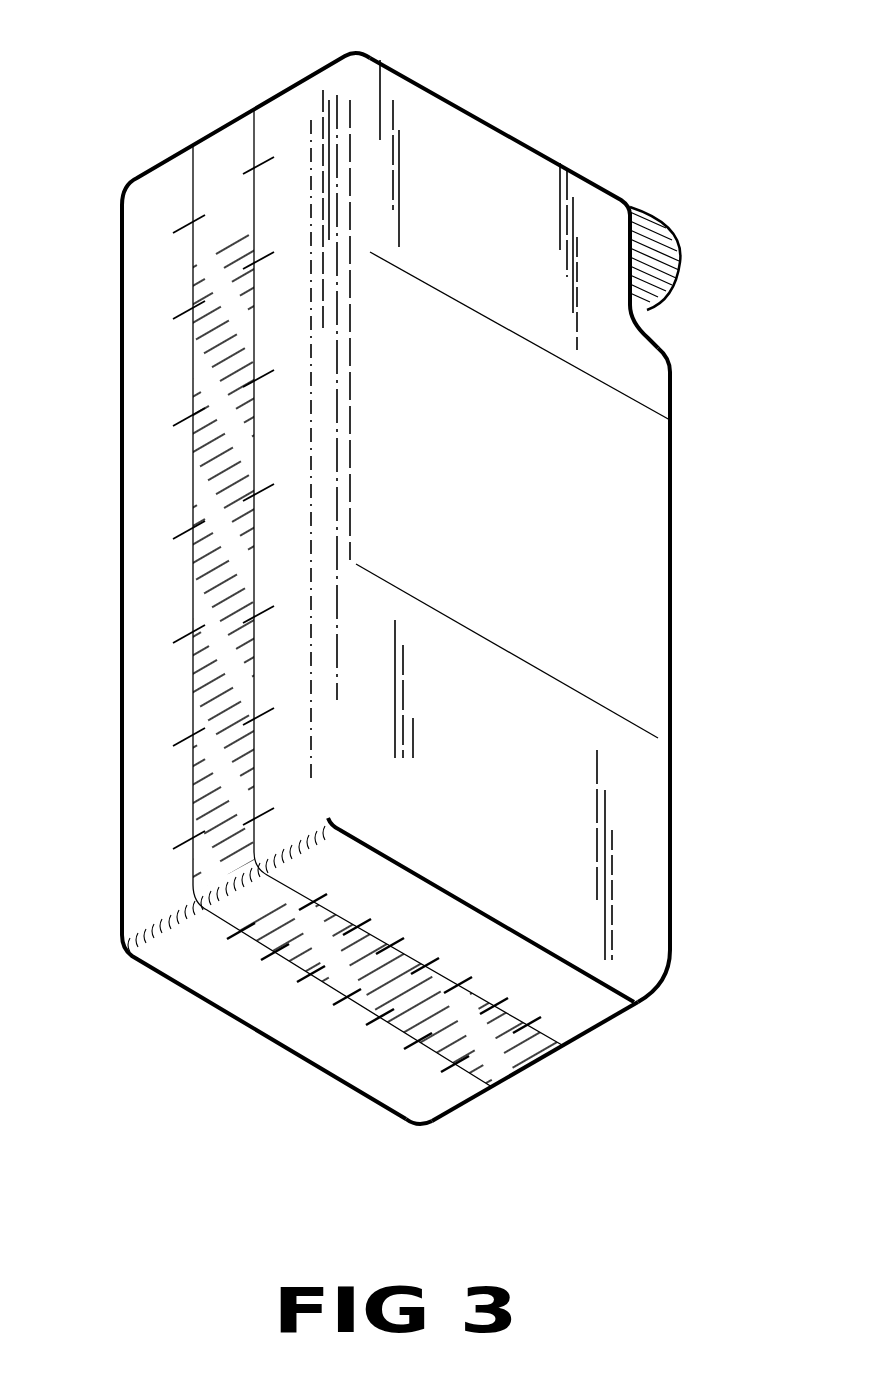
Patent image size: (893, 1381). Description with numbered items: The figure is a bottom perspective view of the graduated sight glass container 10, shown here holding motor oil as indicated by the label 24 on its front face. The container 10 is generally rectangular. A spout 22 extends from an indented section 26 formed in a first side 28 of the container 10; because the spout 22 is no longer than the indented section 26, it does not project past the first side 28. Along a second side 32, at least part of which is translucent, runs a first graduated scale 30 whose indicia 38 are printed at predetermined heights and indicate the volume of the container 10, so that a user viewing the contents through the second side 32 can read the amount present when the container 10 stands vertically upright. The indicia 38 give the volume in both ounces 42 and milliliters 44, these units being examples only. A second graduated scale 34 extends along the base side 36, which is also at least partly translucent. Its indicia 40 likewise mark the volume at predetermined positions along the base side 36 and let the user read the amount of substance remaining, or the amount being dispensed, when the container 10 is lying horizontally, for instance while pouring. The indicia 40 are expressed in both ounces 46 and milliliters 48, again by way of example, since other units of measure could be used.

The graduated sight glass container 10 is at (157, 111).
The spout 22 is at (654, 215).
The label 24 is at (657, 680).
The indented section 26 is at (645, 342).
The first side 28 is at (684, 512).
The first graduated scale 30 is at (190, 595).
The second side 32 is at (152, 289).
The second graduated scale 34 is at (268, 1027).
The base side 36 is at (593, 1001).
The indicia 38 is at (140, 530).
The indicia 40 is at (370, 1073).
The ounces 42 is at (290, 370).
The milliliters 44 is at (165, 328).
The ounces 46 is at (430, 925).
The milliliters 48 is at (412, 1112).